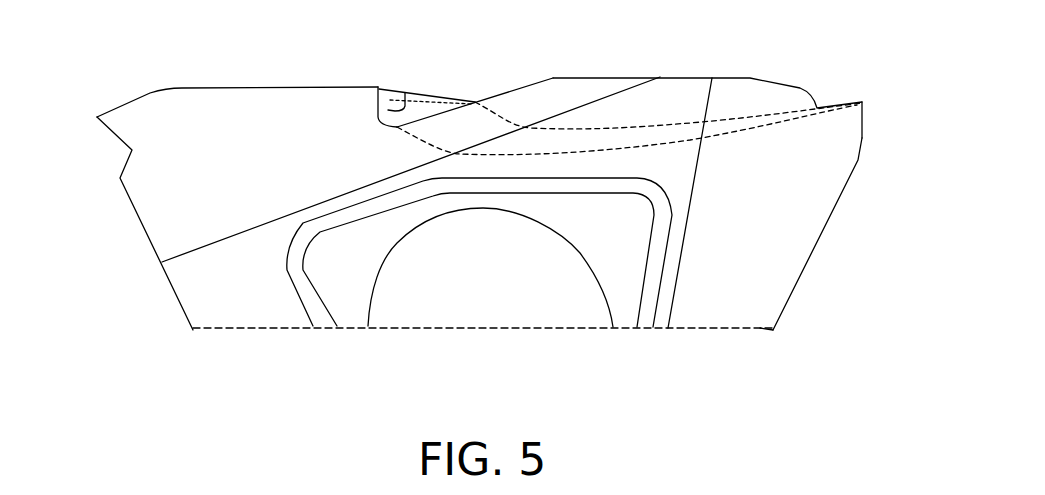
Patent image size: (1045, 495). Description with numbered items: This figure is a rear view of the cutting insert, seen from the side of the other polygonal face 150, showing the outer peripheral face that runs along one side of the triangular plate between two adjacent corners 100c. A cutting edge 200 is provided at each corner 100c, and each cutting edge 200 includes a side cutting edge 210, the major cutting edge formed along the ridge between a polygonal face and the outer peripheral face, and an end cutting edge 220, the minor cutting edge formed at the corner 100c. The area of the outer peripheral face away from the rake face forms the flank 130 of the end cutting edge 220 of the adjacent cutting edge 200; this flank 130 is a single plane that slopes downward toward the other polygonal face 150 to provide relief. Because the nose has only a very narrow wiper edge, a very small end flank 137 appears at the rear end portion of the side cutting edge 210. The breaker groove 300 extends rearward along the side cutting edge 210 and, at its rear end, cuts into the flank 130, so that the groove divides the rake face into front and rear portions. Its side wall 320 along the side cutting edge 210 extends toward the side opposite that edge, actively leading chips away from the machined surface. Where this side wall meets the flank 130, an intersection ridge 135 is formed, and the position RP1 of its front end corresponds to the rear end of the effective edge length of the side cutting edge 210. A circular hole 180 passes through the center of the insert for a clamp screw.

The corner 100c is at (96, 112).
The flank 130 is at (245, 120).
The intersection ridge 135 is at (483, 100).
The end flank 137 is at (122, 106).
The other polygonal face 150 is at (205, 287).
The hole 180 is at (497, 210).
The cutting edge 200 is at (95, 120).
The side cutting edge 210 is at (722, 117).
The end cutting edge 220 is at (130, 148).
The breaker groove 300 is at (432, 110).
The side wall 320 is at (393, 90).
The position of front end of intersection ridge RP1 is at (553, 78).